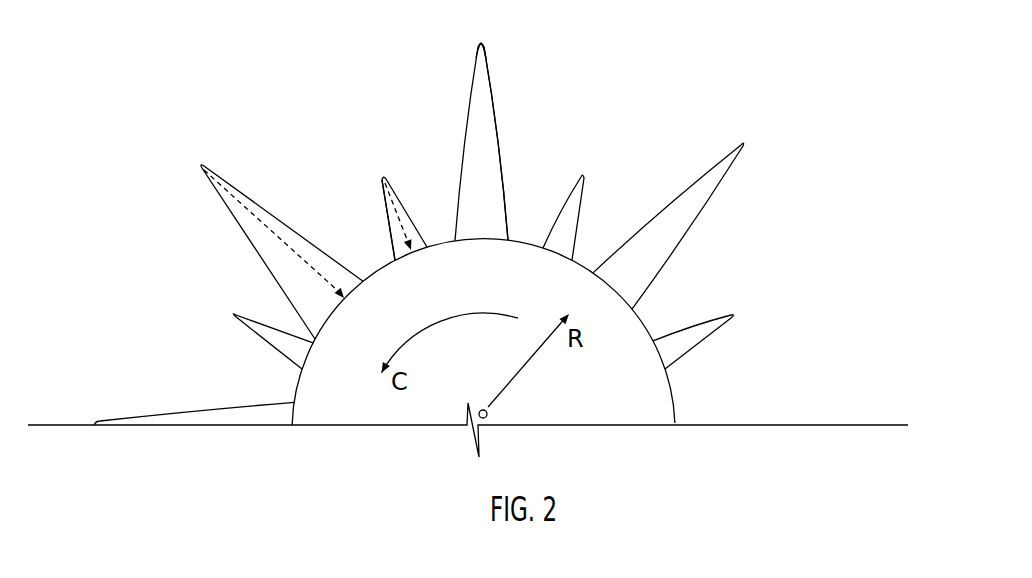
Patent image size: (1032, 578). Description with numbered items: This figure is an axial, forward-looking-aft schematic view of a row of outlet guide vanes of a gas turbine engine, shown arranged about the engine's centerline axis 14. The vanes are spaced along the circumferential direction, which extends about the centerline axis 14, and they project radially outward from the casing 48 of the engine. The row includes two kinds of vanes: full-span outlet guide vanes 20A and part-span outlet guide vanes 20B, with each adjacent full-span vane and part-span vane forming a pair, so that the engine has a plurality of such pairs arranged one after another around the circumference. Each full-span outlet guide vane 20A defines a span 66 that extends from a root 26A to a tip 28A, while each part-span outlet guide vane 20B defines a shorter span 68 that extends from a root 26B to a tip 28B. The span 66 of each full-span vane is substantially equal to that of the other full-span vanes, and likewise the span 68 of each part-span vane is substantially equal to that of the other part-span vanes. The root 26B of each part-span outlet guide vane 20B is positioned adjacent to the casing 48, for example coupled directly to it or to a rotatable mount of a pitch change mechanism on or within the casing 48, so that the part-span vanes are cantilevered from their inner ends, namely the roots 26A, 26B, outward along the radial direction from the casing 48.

The centerline axis 14 is at (487, 415).
The full-span outlet guide vane 20A is at (496, 118).
The part-span outlet guide vane 20B is at (574, 211).
The root 26A is at (520, 217).
The root 26B is at (384, 258).
The tip 28A is at (500, 48).
The tip 28B is at (374, 170).
The casing 48 is at (647, 321).
The span 66 is at (258, 205).
The span 68 is at (412, 222).